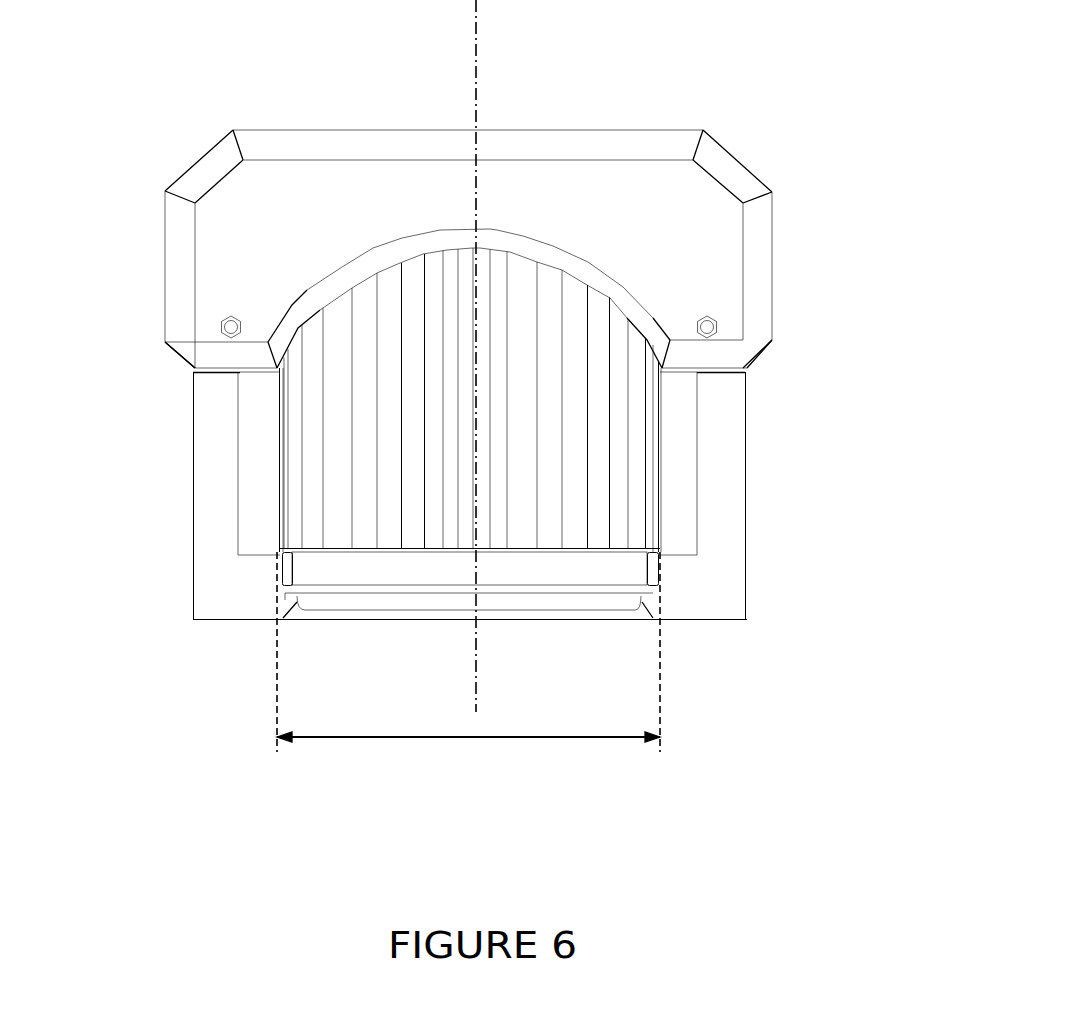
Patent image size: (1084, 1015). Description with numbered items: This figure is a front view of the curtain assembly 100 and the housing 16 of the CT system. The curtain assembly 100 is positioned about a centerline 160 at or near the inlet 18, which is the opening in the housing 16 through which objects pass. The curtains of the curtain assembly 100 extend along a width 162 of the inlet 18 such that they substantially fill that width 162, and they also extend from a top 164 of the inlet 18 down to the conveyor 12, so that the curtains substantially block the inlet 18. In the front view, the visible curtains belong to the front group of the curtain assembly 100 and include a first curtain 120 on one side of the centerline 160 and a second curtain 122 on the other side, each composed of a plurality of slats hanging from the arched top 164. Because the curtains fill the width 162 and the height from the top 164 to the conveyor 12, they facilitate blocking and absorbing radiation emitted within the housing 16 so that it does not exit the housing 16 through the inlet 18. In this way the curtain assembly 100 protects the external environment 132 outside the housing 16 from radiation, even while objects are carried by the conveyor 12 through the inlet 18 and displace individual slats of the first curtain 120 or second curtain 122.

The housing 16 is at (772, 240).
The top of inlet 164 is at (427, 233).
The centerline 160 is at (477, 52).
The curtain assembly 100 is at (682, 440).
The first curtain 120 is at (300, 490).
The second curtain 122 is at (652, 497).
The conveyor 12 is at (628, 573).
The inlet 18 is at (405, 625).
The external environment 132 is at (773, 735).
The width of inlet 162 is at (533, 738).